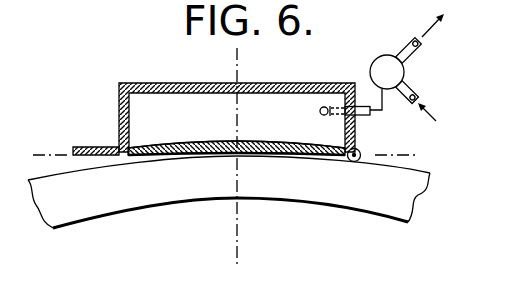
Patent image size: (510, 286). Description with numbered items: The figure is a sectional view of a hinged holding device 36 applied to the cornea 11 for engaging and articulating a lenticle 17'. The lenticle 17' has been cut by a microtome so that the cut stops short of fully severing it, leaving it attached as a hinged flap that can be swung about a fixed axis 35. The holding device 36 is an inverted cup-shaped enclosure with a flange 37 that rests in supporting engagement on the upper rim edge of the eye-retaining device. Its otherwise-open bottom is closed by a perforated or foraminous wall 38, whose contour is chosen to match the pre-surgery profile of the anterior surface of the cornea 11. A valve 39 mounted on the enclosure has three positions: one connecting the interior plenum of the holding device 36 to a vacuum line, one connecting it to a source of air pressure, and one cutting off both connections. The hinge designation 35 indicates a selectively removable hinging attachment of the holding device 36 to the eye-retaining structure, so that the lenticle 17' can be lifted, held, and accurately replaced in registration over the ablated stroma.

The cornea 11 is at (100, 202).
The lenticle 17' is at (236, 122).
The fixed axis 35 is at (355, 162).
The holding device 36 is at (213, 79).
The flange 37 is at (97, 146).
The perforated wall 38 is at (192, 143).
The valve 39 is at (372, 64).